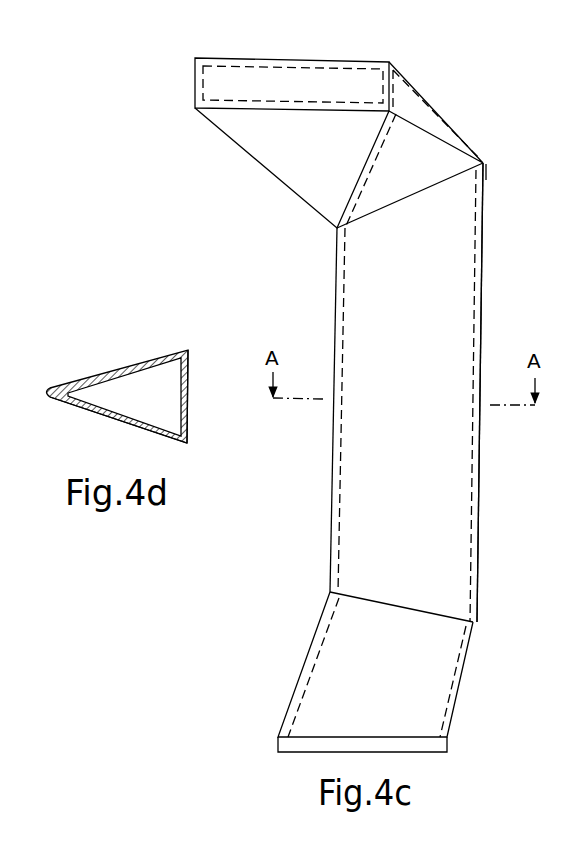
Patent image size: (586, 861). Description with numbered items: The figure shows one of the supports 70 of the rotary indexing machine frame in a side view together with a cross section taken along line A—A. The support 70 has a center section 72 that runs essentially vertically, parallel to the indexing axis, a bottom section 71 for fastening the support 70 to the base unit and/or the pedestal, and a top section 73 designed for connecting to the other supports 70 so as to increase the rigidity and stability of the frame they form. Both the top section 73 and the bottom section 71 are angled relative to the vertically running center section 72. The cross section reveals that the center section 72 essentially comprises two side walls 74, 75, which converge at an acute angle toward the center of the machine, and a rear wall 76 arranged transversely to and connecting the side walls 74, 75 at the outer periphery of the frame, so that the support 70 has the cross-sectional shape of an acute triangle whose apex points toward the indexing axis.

In FIG. 4C, the support 70 is at (336, 392).
In FIG. 4C, the bottom section 71 is at (470, 684).
In FIG. 4C, the center section 72 is at (487, 503).
In FIG. 4C, the top section 73 is at (191, 81).
In FIG. 4D, the side wall 74 is at (96, 374).
In FIG. 4C, the side wall 75 is at (437, 273).
In FIG. 4D, the side wall 75 is at (92, 412).
In FIG. 4D, the rear wall 76 is at (192, 390).